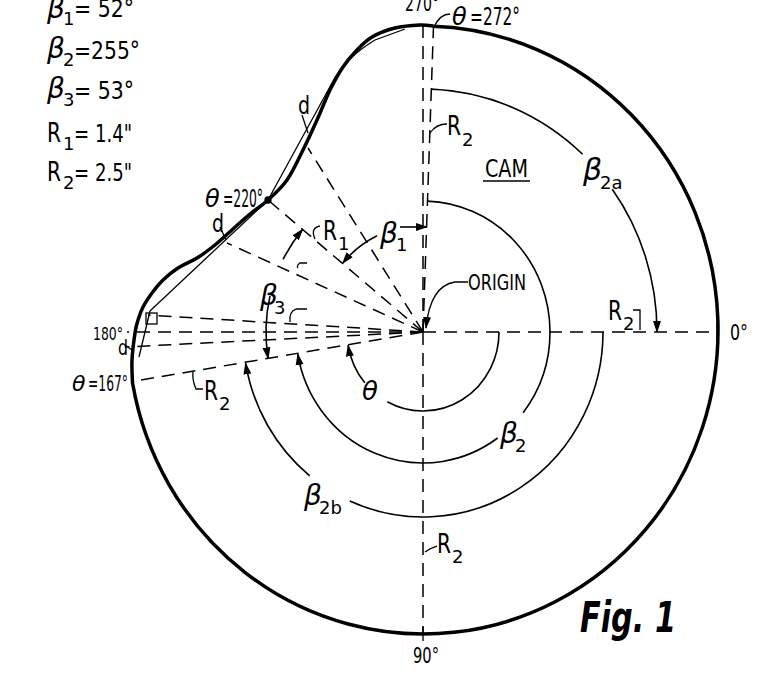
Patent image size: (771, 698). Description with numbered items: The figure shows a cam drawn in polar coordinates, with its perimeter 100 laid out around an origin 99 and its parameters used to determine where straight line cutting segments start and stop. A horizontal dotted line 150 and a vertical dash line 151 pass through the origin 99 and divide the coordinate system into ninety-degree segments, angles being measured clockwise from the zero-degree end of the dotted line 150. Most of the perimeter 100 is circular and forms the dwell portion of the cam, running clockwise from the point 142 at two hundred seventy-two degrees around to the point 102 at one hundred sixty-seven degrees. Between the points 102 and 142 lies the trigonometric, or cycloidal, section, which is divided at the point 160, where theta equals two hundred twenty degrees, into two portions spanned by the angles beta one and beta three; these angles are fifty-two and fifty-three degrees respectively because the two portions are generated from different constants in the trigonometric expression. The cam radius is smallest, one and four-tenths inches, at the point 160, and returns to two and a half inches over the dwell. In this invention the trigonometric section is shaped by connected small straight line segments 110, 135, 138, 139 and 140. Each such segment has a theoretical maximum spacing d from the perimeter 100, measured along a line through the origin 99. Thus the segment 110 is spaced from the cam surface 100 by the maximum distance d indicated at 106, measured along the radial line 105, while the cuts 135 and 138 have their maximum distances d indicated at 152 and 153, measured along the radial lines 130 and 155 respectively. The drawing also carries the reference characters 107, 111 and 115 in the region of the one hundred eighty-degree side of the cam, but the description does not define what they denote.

The origin 99 is at (426, 333).
The cam perimeter 100 is at (317, 147).
The cam perimeter point at 167 degrees 102 is at (135, 383).
The radial line 105 is at (177, 343).
The maximum distance d 106 is at (132, 350).
The point on cam surface 107 is at (141, 325).
The straight line segment 110 is at (140, 360).
The point on cam surface 111 is at (148, 305).
The radial reference line 115 is at (285, 312).
The radial line 130 is at (321, 265).
The straight line cut 135 is at (202, 250).
The straight line cut 138 is at (306, 137).
The straight line segment 139 is at (366, 46).
The straight line segment 140 is at (412, 38).
The cam perimeter point at 272 degrees 142 is at (435, 27).
The horizontal dotted line 150 is at (692, 334).
The vertical dash line 151 is at (425, 607).
The maximum theoretical distance d 152 is at (227, 244).
The maximum theoretical distance d 153 is at (302, 146).
The radial line 155 is at (353, 220).
The dividing point at 220 degrees 160 is at (271, 205).